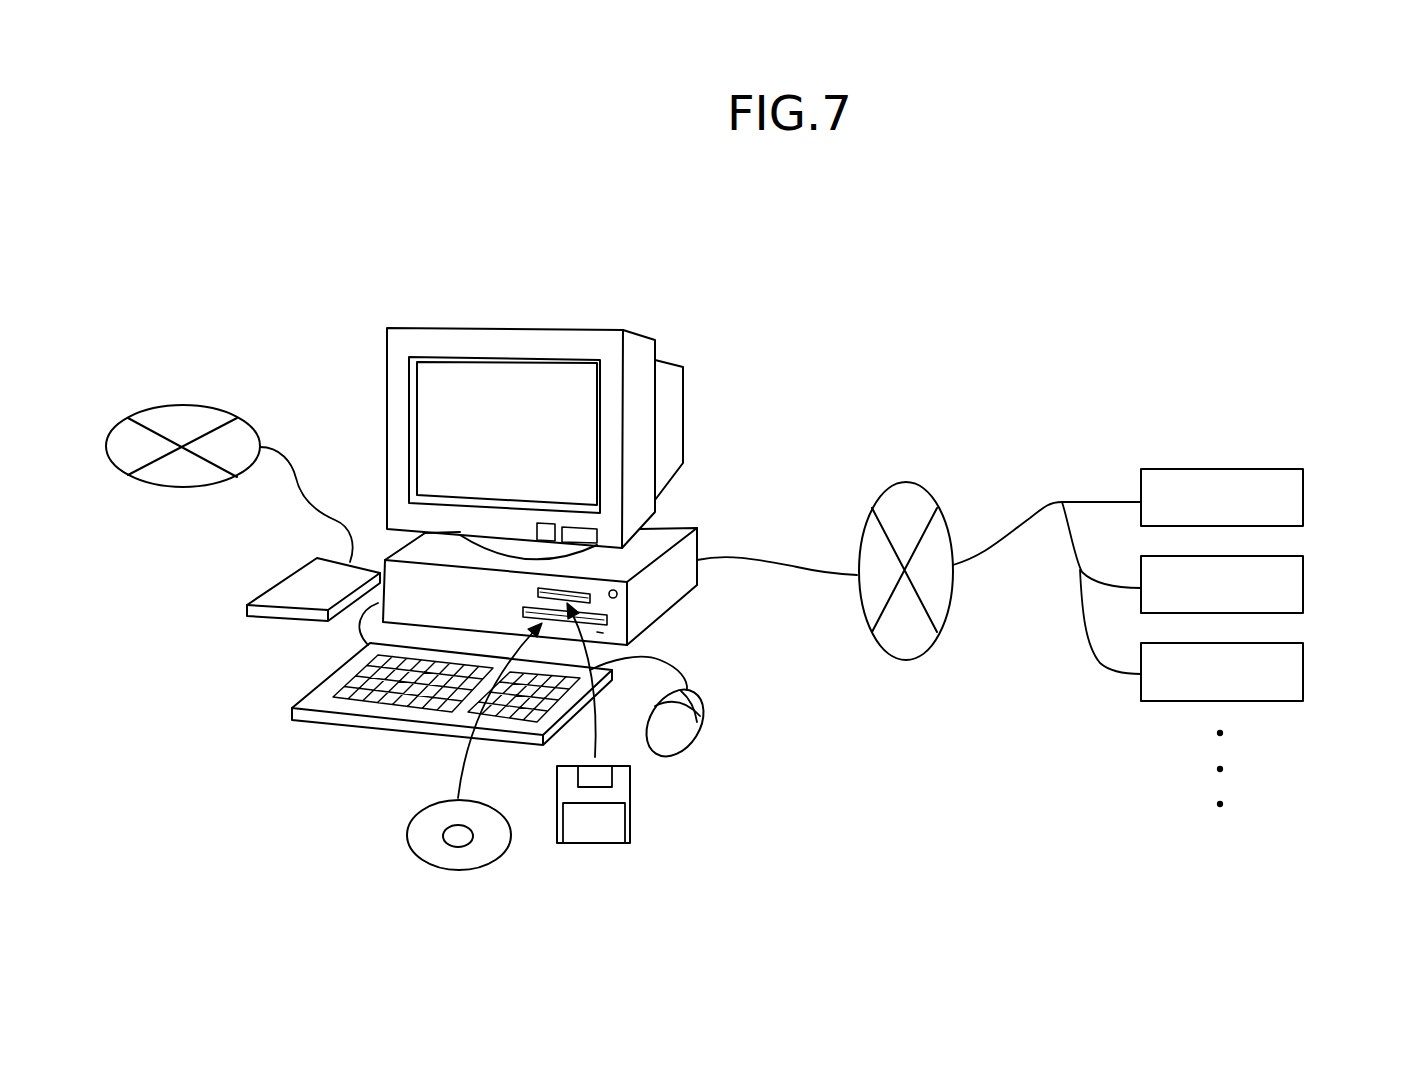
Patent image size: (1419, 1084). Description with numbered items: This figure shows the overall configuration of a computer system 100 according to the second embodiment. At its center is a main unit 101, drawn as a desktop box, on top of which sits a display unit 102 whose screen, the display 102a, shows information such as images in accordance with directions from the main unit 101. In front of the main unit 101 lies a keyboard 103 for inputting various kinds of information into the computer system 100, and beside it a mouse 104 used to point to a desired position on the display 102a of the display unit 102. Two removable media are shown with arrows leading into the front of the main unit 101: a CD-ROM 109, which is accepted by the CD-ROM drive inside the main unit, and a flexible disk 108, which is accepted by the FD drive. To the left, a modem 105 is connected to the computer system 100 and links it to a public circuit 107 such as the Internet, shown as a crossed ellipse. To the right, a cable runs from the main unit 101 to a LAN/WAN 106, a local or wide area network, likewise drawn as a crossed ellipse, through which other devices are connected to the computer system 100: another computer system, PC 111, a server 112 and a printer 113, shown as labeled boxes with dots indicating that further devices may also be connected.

The computer system 100 is at (586, 258).
The main unit 101 is at (672, 530).
The display unit 102 is at (642, 355).
The display 102a is at (507, 390).
The keyboard 103 is at (327, 693).
The mouse 104 is at (678, 730).
The modem 105 is at (303, 585).
The LAN/WAN 106 is at (910, 660).
The public circuit 107 is at (180, 403).
The flexible disk 108 is at (597, 845).
The CD-ROM 109 is at (407, 837).
The computer system (PC) 111 is at (1303, 495).
The server 112 is at (1303, 582).
The printer 113 is at (1303, 668).